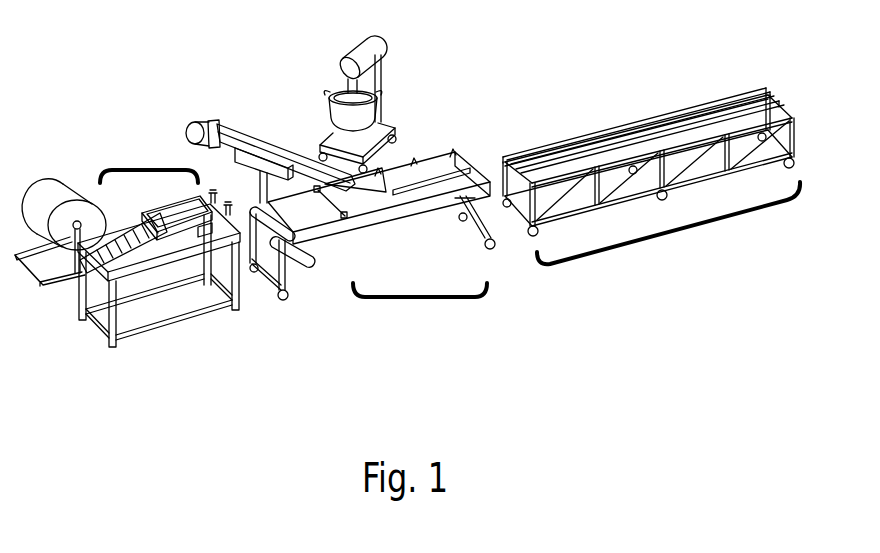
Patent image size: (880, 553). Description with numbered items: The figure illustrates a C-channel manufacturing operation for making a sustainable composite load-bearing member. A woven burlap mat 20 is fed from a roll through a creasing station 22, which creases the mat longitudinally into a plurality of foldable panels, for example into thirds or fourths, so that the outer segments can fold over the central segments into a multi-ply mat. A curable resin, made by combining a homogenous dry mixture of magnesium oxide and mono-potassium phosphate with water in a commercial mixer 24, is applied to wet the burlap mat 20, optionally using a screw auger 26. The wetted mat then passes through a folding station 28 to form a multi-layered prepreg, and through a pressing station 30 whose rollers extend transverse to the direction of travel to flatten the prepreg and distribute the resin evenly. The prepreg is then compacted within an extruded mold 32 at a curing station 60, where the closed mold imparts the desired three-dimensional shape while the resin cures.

The woven burlap mat 20 is at (50, 183).
The creasing station 22 is at (148, 167).
The commercial mixer 24 is at (372, 48).
The screw auger 26 is at (195, 123).
The folding station 28 is at (381, 265).
The pressing station 30 is at (425, 297).
The extruded mold 32 is at (651, 172).
The curing station 60 is at (648, 238).